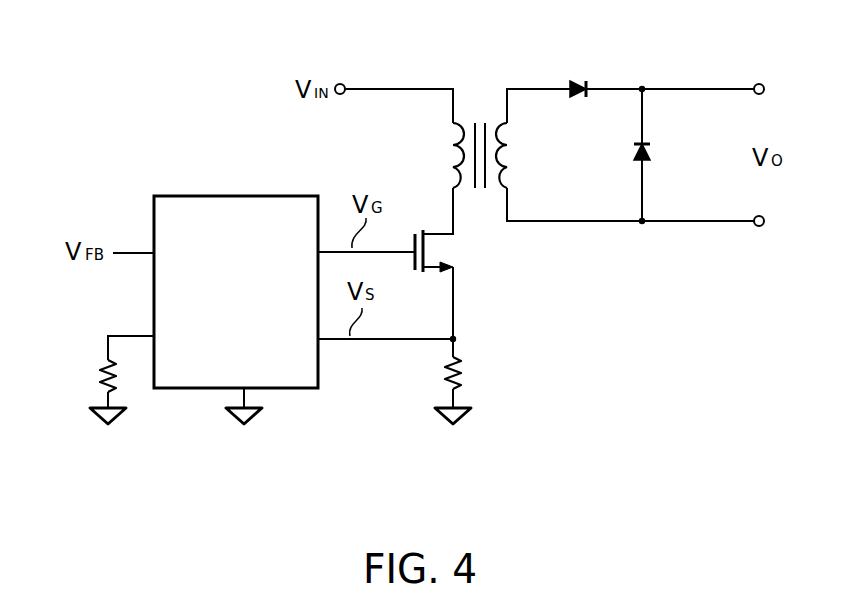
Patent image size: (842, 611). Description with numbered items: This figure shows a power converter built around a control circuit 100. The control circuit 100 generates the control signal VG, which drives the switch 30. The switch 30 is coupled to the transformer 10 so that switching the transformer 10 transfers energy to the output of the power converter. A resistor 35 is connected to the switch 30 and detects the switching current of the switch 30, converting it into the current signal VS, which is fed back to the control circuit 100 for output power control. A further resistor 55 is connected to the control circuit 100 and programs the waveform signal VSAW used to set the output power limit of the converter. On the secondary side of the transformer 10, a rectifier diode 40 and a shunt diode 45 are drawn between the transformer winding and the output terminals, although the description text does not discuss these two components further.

The control circuit 100 is at (152, 222).
The transformer 10 is at (478, 110).
The switch 30 is at (455, 250).
The resistor 35 is at (468, 372).
The output rectifier diode 40 is at (575, 76).
The zener diode 45 is at (662, 152).
The resistor 55 is at (95, 378).